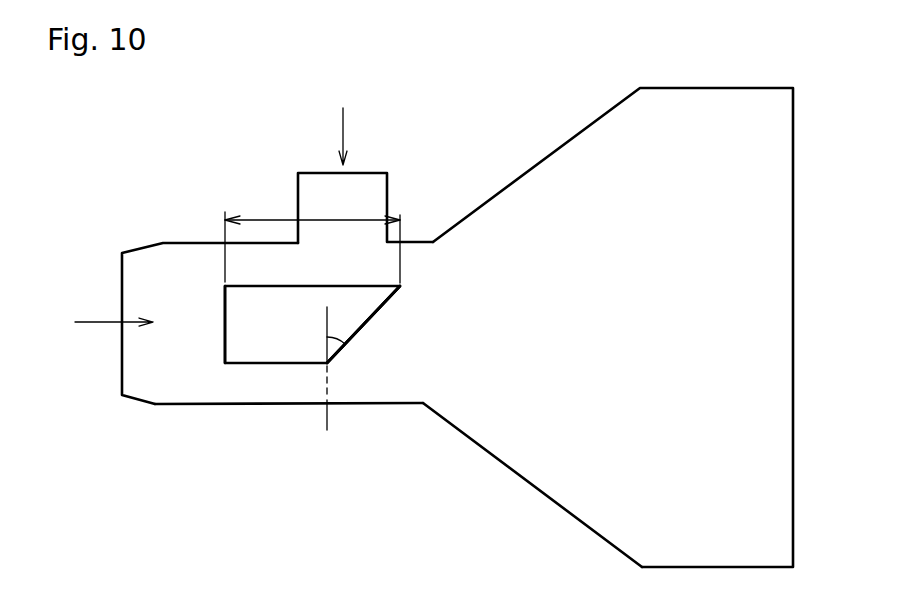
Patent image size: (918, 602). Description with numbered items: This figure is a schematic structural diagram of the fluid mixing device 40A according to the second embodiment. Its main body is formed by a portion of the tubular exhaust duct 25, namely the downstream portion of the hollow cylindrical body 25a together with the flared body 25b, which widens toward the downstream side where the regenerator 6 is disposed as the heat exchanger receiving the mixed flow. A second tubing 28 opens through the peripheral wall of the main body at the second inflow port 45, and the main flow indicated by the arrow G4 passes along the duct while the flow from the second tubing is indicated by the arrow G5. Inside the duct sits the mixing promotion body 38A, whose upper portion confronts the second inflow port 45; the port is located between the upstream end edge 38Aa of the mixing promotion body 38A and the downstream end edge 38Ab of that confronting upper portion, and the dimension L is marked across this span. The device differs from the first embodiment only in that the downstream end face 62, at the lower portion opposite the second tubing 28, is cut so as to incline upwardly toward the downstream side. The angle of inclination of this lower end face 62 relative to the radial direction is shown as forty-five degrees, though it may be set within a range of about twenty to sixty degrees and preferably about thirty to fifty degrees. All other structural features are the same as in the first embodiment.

The regenerator 6 is at (737, 108).
The tubular exhaust duct 25 is at (448, 508).
The hollow cylindrical body 25a is at (305, 404).
The flared body 25b is at (455, 430).
The second tubing 28 is at (387, 197).
The mixing promotion body 38A is at (245, 365).
The upstream end edge 38Aa is at (223, 320).
The downstream end edge 38Ab is at (403, 284).
The fluid mixing device 40A is at (173, 177).
The second inflow port 45 is at (350, 225).
The downstream end face 62 is at (367, 322).
The gas flow G4 is at (93, 323).
The gas flow G5 is at (343, 127).
The length L is at (312, 232).